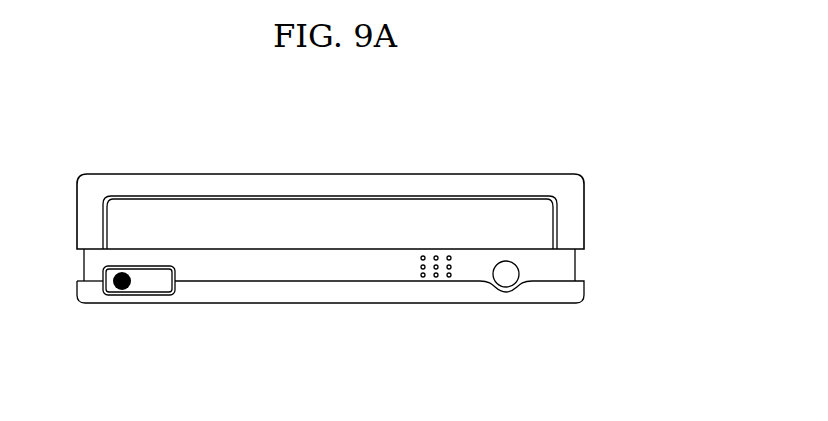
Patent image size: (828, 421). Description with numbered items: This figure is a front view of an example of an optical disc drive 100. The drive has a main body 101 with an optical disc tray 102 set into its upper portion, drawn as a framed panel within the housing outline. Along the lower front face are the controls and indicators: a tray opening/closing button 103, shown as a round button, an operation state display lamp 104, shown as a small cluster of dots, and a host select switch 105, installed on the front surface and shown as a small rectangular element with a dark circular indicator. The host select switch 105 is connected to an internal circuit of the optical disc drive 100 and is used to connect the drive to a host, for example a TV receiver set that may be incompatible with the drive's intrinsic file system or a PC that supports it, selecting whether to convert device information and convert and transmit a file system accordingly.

The optical disc drive 100 is at (592, 177).
The main body 101 is at (396, 182).
The optical disc tray 102 is at (148, 215).
The tray opening/closing button 103 is at (506, 281).
The operation state display lamp 104 is at (436, 278).
The host select switch 105 is at (152, 288).